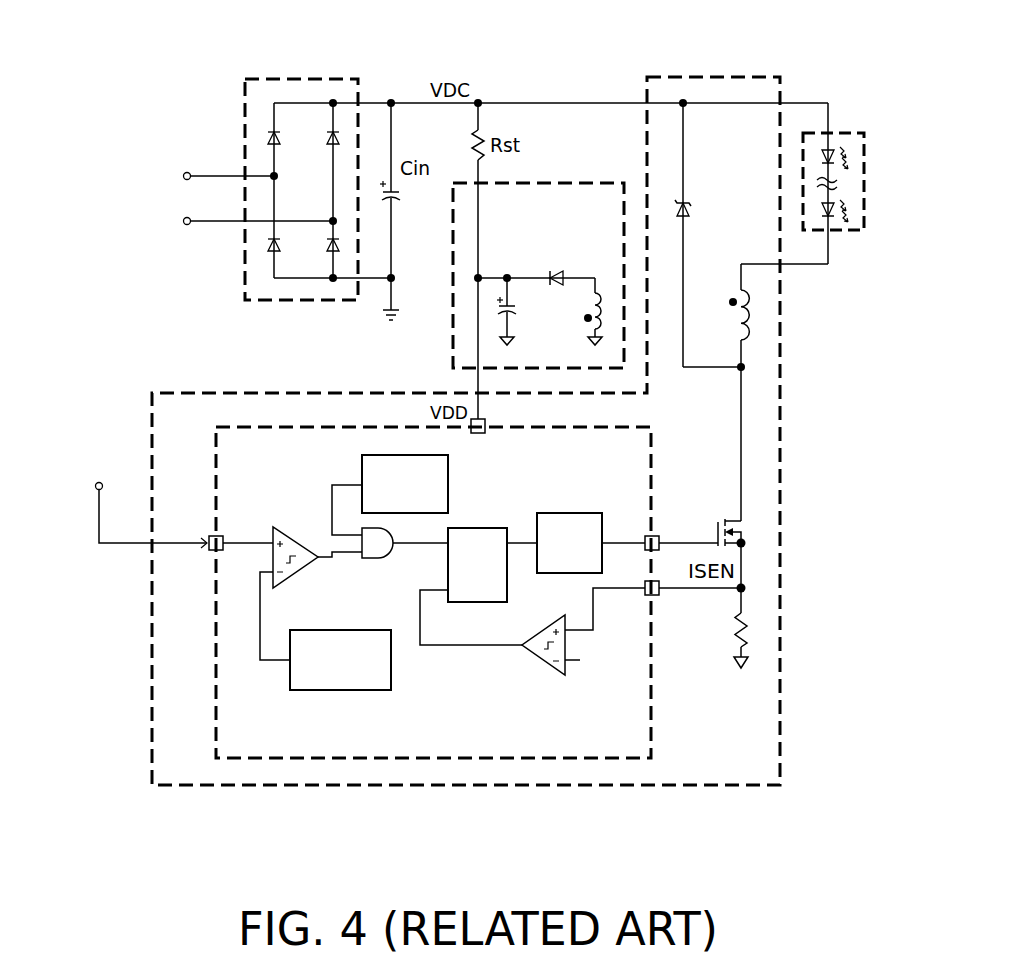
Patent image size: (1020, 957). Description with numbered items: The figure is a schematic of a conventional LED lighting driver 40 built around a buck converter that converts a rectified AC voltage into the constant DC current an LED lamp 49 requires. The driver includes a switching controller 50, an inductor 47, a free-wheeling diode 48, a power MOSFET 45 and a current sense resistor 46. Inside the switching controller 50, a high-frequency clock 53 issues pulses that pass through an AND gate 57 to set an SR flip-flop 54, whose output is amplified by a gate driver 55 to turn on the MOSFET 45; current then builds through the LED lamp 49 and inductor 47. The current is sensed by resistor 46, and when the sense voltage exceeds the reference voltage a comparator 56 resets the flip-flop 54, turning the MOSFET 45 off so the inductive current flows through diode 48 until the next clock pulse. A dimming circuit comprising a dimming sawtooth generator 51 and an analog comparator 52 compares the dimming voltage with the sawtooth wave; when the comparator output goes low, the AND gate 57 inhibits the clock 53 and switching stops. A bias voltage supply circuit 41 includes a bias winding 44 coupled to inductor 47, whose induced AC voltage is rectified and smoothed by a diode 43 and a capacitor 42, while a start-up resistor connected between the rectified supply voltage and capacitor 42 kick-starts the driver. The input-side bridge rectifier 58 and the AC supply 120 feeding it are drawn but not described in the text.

The LED lighting driver 40 is at (753, 726).
The bias voltage supply circuit 41 is at (607, 227).
The capacitor 42 is at (515, 299).
The diode 43 is at (552, 266).
The bias winding 44 is at (592, 307).
The power MOSFET 45 is at (736, 521).
The current sense resistor 46 is at (736, 619).
The inductor 47 is at (738, 292).
The free-wheeling diode 48 is at (690, 212).
The LED lamp 49 is at (852, 131).
The switching controller 50 is at (634, 459).
The dimming sawtooth generator 51 is at (335, 690).
The analog comparator 52 is at (296, 572).
The high-frequency clock 53 is at (362, 472).
The SR flip-flop 54 is at (495, 527).
The gate driver 55 is at (588, 512).
The comparator 56 is at (541, 658).
The AND gate 57 is at (368, 559).
The bridge rectifier 58 is at (310, 79).
The AC voltage source 120 is at (233, 198).